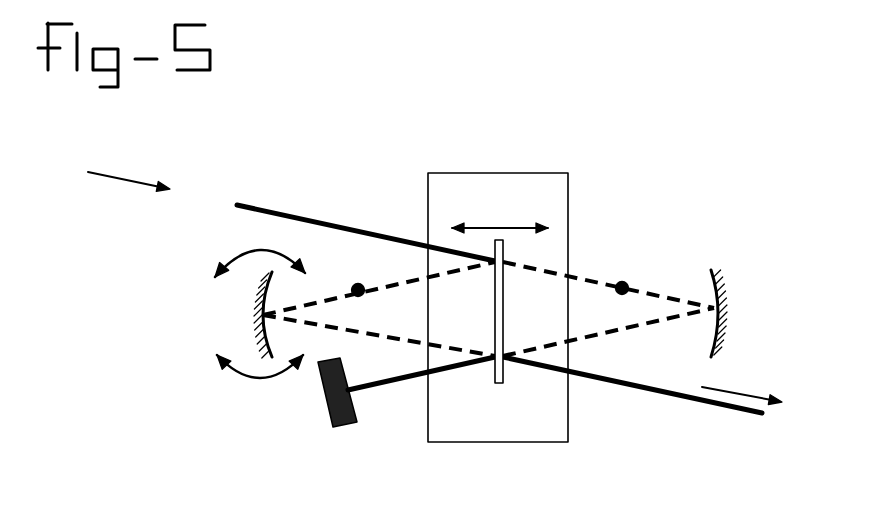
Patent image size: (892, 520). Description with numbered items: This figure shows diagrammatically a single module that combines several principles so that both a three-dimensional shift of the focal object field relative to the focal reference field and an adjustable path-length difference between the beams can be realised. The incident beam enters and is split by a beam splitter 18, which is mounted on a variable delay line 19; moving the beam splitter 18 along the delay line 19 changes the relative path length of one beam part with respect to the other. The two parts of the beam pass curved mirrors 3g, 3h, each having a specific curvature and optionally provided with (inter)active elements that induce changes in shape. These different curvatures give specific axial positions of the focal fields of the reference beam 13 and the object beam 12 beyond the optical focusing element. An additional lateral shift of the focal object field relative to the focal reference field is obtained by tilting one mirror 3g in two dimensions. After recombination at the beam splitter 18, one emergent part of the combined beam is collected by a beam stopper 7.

The mirror having a specific curvature 3g is at (254, 314).
The mirror having a specific curvature 3h is at (744, 313).
The beam stopper 7 is at (396, 401).
The object beam 12 is at (358, 290).
The reference beam 13 is at (622, 288).
The beam splitter 18 is at (498, 307).
The variable delay line 19 is at (500, 208).